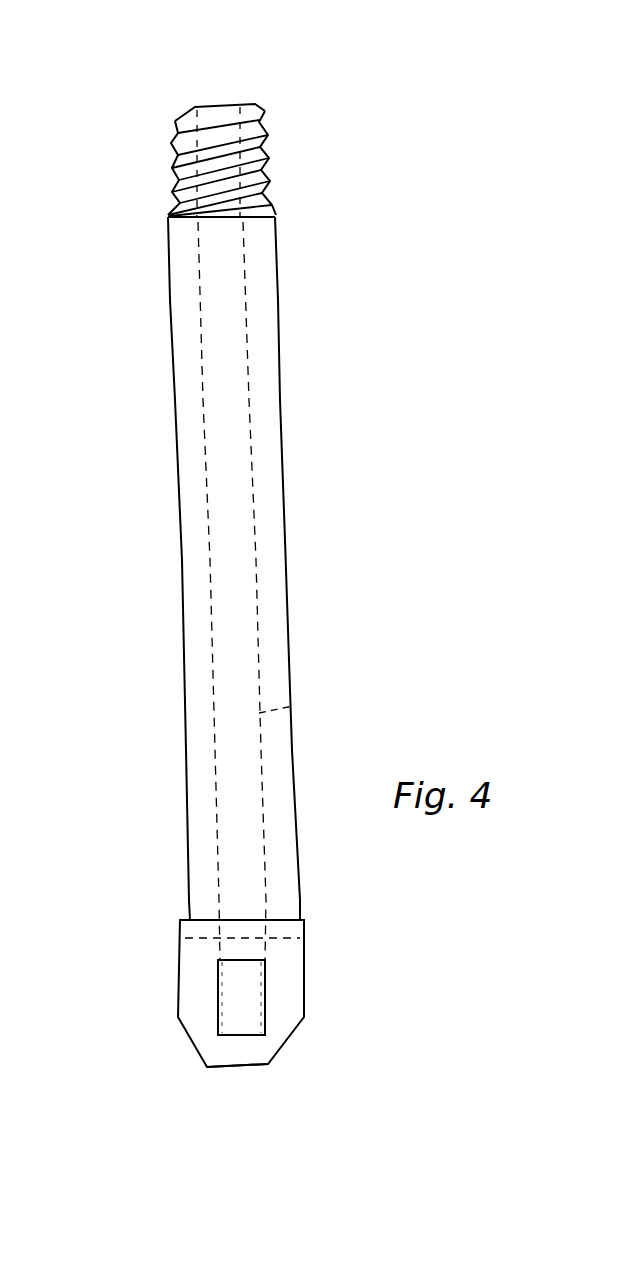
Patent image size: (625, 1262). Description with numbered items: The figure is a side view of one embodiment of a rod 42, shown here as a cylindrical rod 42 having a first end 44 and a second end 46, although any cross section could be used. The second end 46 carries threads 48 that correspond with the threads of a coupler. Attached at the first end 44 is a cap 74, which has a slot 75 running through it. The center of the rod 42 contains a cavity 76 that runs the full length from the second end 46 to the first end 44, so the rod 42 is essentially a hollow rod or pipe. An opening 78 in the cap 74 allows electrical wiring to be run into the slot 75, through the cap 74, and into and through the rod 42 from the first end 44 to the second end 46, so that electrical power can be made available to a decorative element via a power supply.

The rod 42 is at (287, 528).
The first end 44 is at (262, 1067).
The second end 46 is at (222, 104).
The threads 48 is at (268, 156).
The cap 74 is at (305, 931).
The slot 75 is at (218, 985).
The cavity 76 is at (295, 706).
The opening 78 is at (245, 965).